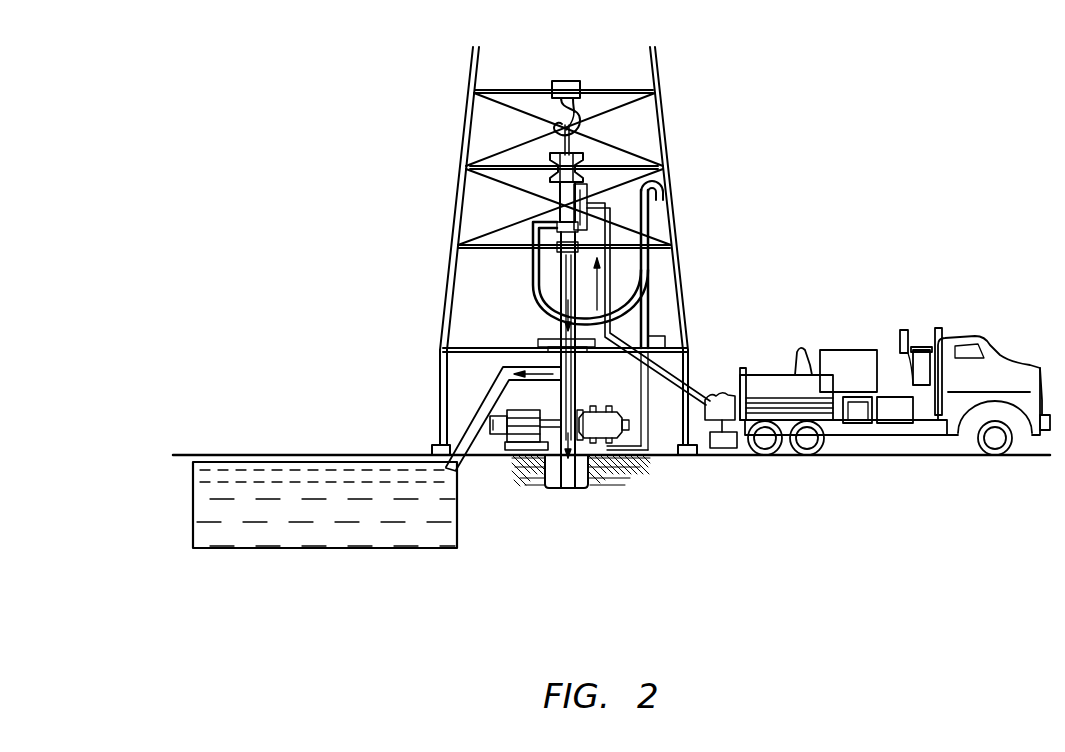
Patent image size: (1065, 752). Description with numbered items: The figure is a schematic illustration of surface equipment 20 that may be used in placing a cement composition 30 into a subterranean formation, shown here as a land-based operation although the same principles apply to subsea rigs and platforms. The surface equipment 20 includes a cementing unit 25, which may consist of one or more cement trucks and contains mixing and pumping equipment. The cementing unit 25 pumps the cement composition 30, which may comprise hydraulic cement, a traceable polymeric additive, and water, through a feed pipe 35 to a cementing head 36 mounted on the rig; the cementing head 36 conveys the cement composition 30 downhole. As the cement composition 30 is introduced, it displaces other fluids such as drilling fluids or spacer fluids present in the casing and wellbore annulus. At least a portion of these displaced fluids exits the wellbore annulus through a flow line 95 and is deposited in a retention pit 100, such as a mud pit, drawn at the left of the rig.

The surface equipment 20 is at (908, 90).
The cementing unit 25 is at (927, 438).
The cement composition 30 is at (560, 285).
The feed pipe 35 is at (658, 369).
The cementing head 36 is at (597, 159).
The flow line 95 is at (475, 445).
The retention pit 100 is at (246, 548).